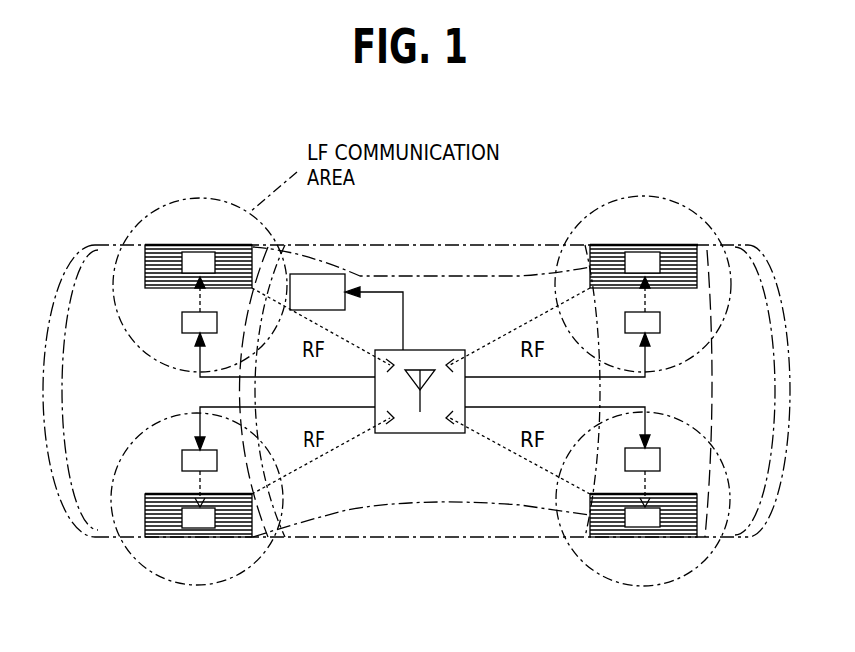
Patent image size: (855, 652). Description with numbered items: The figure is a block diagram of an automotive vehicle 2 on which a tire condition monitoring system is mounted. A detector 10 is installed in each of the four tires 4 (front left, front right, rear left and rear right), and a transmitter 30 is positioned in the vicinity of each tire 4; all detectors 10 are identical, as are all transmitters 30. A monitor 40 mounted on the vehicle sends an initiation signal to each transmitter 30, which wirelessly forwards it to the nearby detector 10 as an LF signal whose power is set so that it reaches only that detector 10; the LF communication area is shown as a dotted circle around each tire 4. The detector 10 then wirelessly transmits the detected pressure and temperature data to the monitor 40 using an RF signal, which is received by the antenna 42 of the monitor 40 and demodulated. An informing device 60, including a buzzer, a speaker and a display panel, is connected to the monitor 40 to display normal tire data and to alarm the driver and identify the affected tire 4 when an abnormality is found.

The automotive vehicle 2 is at (423, 532).
The tire 4 is at (163, 247).
The detector 10 is at (208, 257).
The transmitter 30 is at (182, 325).
The monitor 40 is at (418, 355).
The antenna 42 is at (433, 370).
The informing device 60 is at (297, 277).